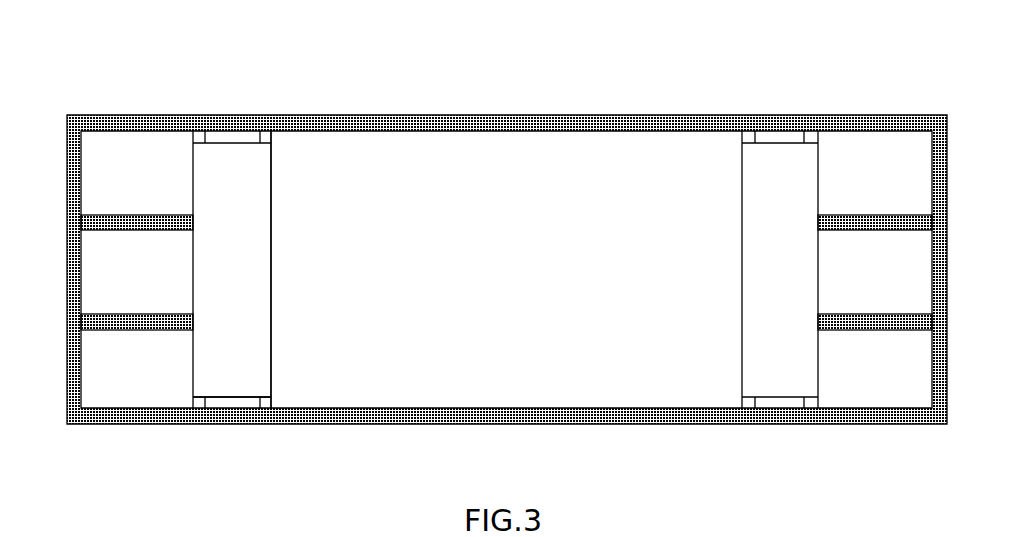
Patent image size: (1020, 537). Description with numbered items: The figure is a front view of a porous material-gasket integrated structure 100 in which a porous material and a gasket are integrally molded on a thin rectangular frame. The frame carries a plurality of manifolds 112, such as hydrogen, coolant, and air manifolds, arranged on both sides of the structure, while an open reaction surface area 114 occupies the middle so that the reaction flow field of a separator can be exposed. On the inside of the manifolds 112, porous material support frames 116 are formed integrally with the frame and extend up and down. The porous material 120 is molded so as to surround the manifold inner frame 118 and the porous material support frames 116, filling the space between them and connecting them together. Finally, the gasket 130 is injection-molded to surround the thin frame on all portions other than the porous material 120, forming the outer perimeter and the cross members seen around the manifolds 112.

The porous material-gasket integrated structure 100 is at (507, 242).
The manifolds 112 is at (130, 142).
The reaction surface area 114 is at (625, 153).
The porous material support frames 116 is at (266, 133).
The manifold inner frame 118 is at (203, 130).
The porous material 120 is at (260, 379).
The gasket 130 is at (420, 125).